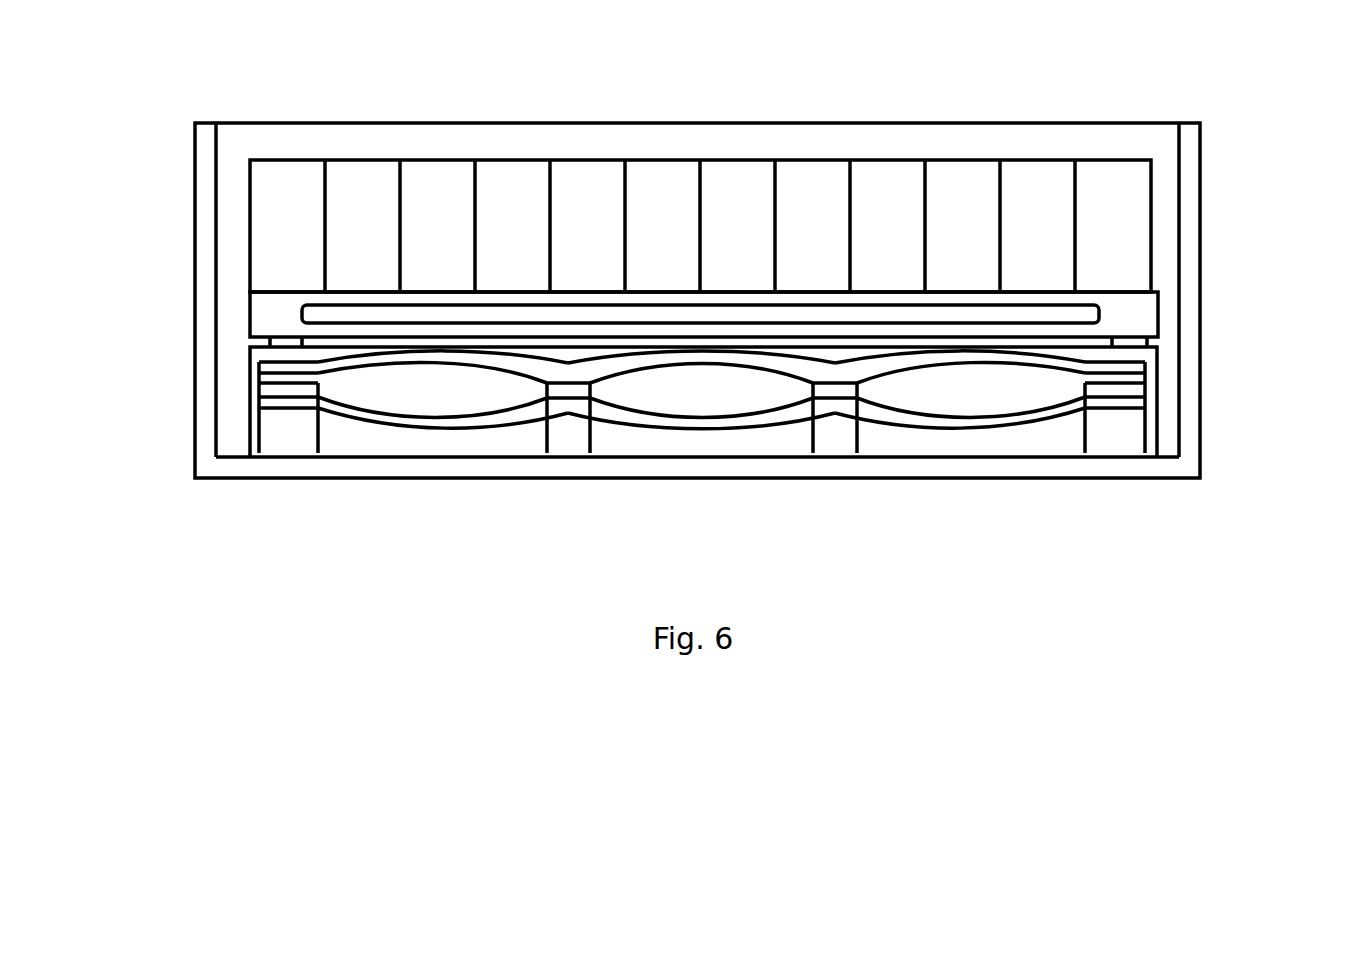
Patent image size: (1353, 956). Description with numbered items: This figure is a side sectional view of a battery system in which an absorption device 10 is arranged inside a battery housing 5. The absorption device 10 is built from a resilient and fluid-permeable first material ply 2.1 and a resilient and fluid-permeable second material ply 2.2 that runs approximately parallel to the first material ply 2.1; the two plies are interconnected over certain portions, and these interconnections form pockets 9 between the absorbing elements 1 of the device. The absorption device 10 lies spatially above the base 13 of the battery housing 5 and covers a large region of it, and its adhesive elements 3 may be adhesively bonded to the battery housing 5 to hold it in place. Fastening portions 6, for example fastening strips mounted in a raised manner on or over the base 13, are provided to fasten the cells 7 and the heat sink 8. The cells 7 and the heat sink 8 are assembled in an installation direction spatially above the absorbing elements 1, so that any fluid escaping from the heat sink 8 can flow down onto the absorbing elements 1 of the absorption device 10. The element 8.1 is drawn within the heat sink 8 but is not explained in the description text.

The absorbing element 1 is at (495, 393).
The first material ply 2.1 is at (687, 423).
The second material ply 2.2 is at (620, 372).
The adhesive element 3 is at (280, 427).
The battery housing 5 is at (1197, 343).
The fastening portion 6 is at (340, 353).
The cell 7 is at (1115, 215).
The heat sink 8 is at (1126, 305).
The heating element 8.1 is at (327, 315).
The pocket 9 is at (701, 448).
The absorption device 10 is at (238, 407).
The base 13 is at (403, 463).